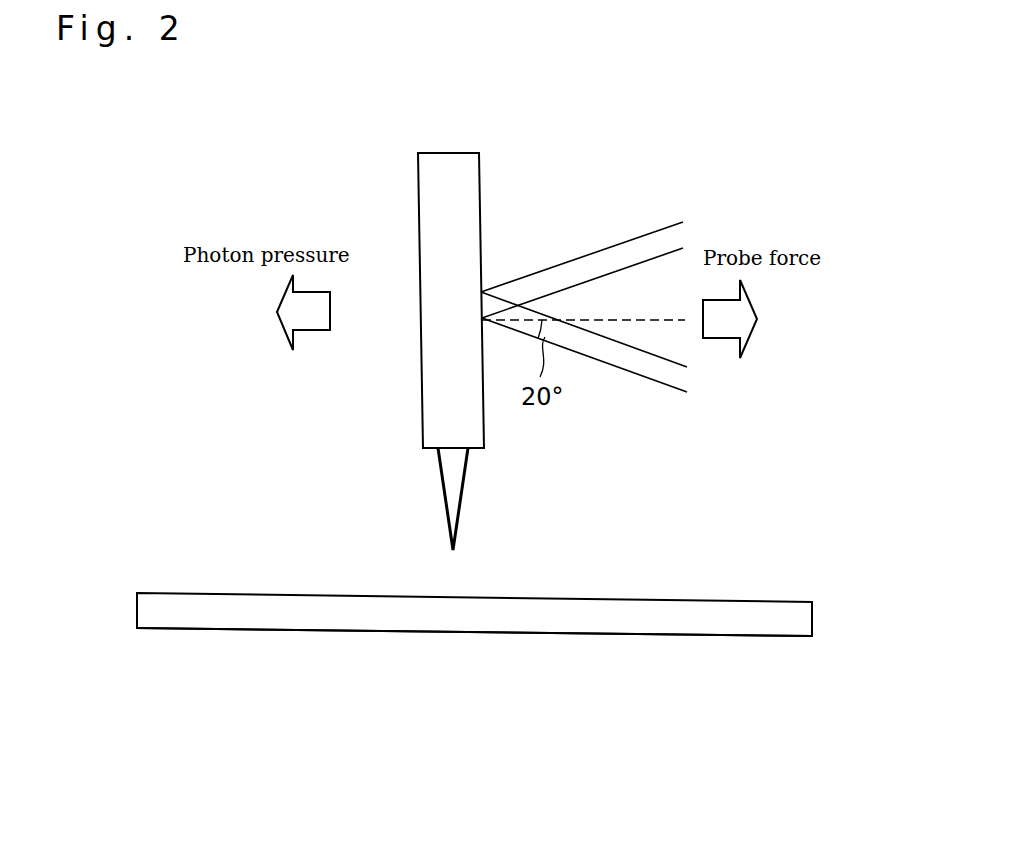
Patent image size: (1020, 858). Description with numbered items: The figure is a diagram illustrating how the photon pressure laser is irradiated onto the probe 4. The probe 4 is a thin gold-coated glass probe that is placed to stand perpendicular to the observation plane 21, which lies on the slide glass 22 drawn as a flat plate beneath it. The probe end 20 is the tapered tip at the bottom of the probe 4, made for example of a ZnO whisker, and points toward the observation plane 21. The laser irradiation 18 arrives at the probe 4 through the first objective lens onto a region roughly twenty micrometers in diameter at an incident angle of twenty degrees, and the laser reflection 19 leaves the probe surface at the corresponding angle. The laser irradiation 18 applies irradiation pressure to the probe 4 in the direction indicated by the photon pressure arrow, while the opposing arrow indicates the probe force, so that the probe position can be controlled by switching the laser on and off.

The probe 4 is at (481, 205).
The laser irradiation 18 is at (617, 355).
The laser reflection 19 is at (612, 258).
The probe end 20 is at (463, 497).
The observation plane 21 is at (617, 601).
The slide glass 22 is at (612, 625).